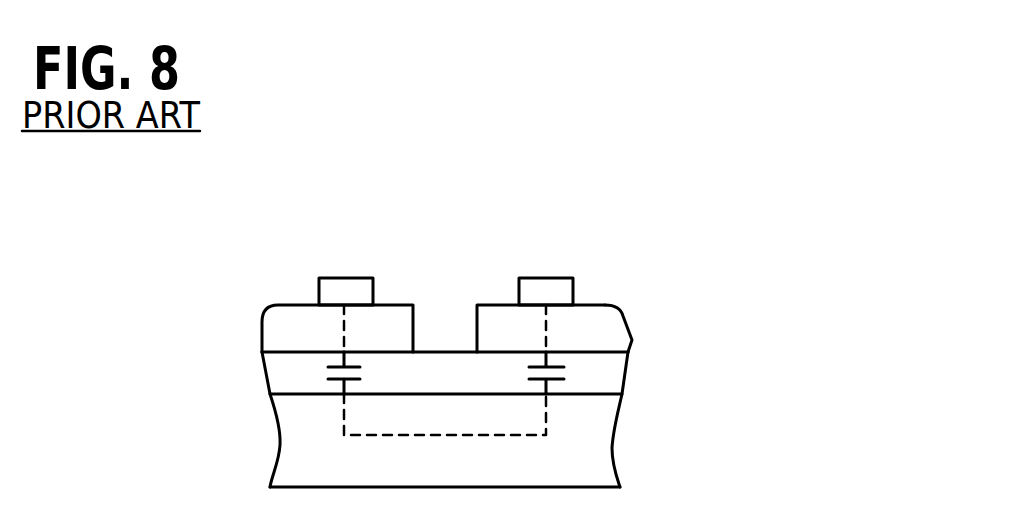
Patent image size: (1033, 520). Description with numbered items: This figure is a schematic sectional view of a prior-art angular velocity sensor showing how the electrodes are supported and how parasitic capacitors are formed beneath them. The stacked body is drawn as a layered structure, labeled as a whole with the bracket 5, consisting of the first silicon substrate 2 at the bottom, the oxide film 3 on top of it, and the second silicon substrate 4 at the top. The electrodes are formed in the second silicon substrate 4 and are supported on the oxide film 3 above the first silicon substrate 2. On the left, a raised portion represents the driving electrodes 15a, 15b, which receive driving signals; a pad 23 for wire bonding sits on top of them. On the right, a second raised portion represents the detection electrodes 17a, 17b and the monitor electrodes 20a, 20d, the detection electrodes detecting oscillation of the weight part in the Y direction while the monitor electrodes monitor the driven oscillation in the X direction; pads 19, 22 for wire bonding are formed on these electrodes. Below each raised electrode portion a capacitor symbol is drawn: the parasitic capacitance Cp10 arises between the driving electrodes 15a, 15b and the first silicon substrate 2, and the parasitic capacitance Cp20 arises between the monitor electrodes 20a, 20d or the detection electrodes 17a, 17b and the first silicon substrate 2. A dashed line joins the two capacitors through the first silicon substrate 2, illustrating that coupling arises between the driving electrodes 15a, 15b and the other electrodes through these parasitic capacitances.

The first silicon substrate 2 is at (615, 418).
The oxide film 3 is at (620, 380).
The second silicon substrate 4 is at (632, 340).
The substrate 5 is at (729, 362).
The driving electrode 15a is at (283, 320).
The driving electrode 15b is at (337, 328).
The detection electrode 17a is at (608, 304).
The detection electrode 17b is at (541, 328).
The monitor electrode 20a is at (541, 328).
The monitor electrode 20d is at (541, 328).
The pad 19 is at (556, 278).
The pad 22 is at (546, 291).
The pad 23 is at (330, 278).
The parasitic capacitance Cp10 is at (318, 375).
The parasitic capacitance Cp20 is at (557, 360).